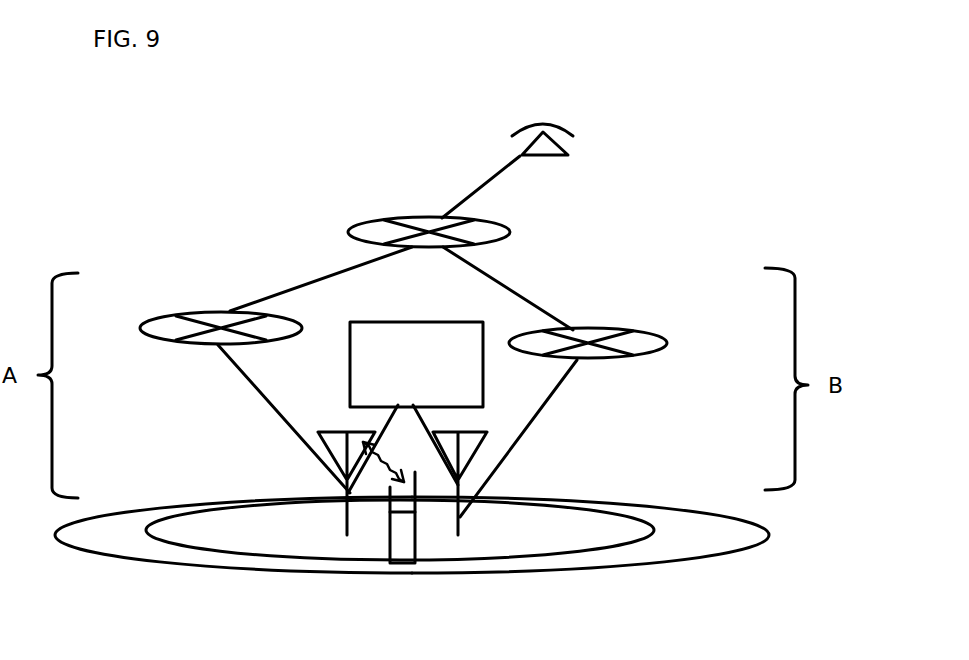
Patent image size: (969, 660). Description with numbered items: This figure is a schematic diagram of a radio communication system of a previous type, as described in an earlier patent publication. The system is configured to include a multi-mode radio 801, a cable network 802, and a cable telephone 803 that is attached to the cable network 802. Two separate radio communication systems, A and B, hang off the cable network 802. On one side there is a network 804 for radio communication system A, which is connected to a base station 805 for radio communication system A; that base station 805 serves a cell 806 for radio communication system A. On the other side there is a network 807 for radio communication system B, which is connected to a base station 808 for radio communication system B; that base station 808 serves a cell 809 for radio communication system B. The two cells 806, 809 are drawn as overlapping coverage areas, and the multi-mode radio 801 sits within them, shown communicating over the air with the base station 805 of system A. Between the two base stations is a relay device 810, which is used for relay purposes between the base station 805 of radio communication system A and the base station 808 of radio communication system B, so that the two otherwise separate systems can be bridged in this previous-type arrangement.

The multi-mode radio 801 is at (401, 546).
The cable network 802 is at (422, 217).
The cable telephone 803 is at (543, 124).
The network for radio communication system A 804 is at (160, 333).
The base station for radio communication system A 805 is at (316, 432).
The cell for radio communication system A 806 is at (98, 540).
The network for radio communication system B 807 is at (645, 333).
The base station for radio communication system B 808 is at (489, 432).
The cell for radio communication system B 809 is at (730, 530).
The relay device 810 is at (395, 322).